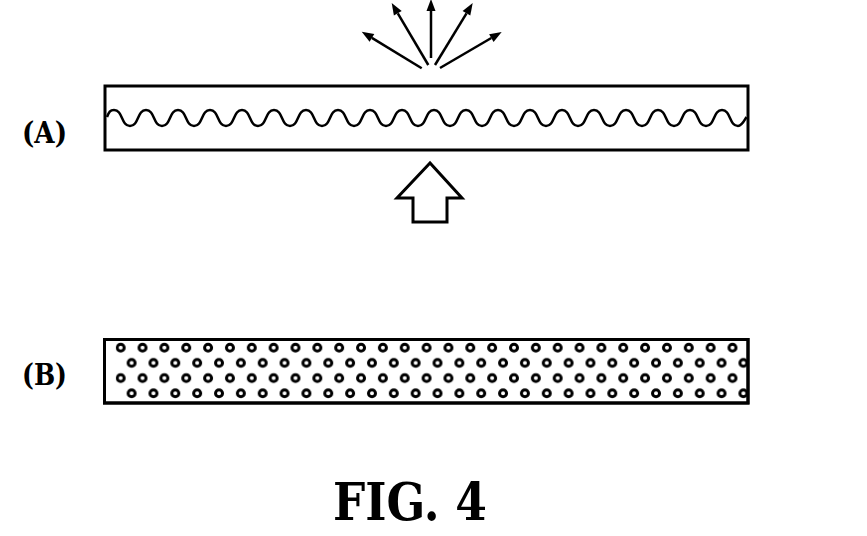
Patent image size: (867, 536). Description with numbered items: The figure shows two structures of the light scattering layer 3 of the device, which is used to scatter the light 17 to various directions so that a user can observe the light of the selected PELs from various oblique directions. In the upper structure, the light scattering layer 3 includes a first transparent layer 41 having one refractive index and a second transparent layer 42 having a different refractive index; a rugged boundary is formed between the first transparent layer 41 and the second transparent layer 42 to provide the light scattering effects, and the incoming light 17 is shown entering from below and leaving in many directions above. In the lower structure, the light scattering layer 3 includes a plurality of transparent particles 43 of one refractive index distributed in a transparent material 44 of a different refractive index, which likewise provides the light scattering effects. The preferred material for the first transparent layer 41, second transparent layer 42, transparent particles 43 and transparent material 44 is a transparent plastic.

The light scattering layer 3 is at (209, 63).
The first transparent layer 41 is at (454, 102).
The second transparent layer 42 is at (454, 146).
The light 17 is at (447, 208).
The transparent particles 43 is at (695, 358).
The transparent material 44 is at (748, 372).